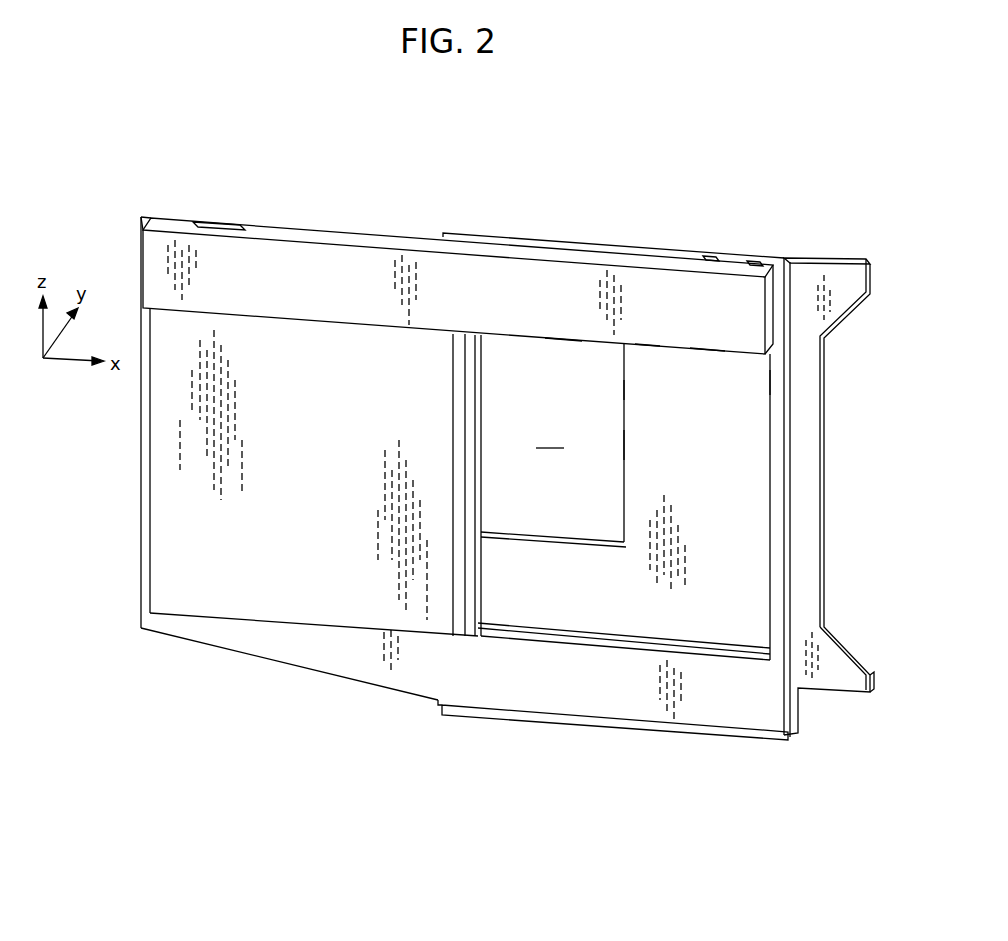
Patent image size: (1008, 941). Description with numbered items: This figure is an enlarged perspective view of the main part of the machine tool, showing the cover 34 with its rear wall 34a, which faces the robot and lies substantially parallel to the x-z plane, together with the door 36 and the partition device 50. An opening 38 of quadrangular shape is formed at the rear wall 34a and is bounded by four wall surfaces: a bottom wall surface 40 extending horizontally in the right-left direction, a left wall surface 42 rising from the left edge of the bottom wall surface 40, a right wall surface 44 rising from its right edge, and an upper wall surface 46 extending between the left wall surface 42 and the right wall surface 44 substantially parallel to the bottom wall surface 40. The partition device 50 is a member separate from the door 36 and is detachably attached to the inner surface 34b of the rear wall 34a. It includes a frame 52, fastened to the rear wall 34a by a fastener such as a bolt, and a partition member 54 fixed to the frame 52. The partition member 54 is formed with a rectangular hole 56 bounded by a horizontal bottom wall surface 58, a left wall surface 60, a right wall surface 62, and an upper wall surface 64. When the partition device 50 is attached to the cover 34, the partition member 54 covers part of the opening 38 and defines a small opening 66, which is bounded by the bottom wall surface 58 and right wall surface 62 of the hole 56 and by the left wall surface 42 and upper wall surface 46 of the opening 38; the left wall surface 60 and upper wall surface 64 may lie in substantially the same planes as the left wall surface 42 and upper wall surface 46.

The cover 34 is at (159, 210).
The rear wall 34a is at (467, 673).
The inner surface 34b is at (390, 230).
The door 36 is at (190, 568).
The opening 38 is at (649, 354).
The bottom wall surface 40 is at (637, 636).
The left wall surface 42 is at (480, 567).
The right wall surface 44 is at (776, 382).
The upper wall surface 46 is at (697, 352).
The partition device 50 is at (713, 596).
The frame 52 is at (790, 498).
The partition member 54 is at (705, 503).
The hole 56 is at (618, 389).
The bottom wall surface 58 is at (568, 534).
The left wall surface 60 is at (483, 383).
The right wall surface 62 is at (624, 438).
The upper wall surface 64 is at (578, 340).
The small opening 66 is at (552, 443).